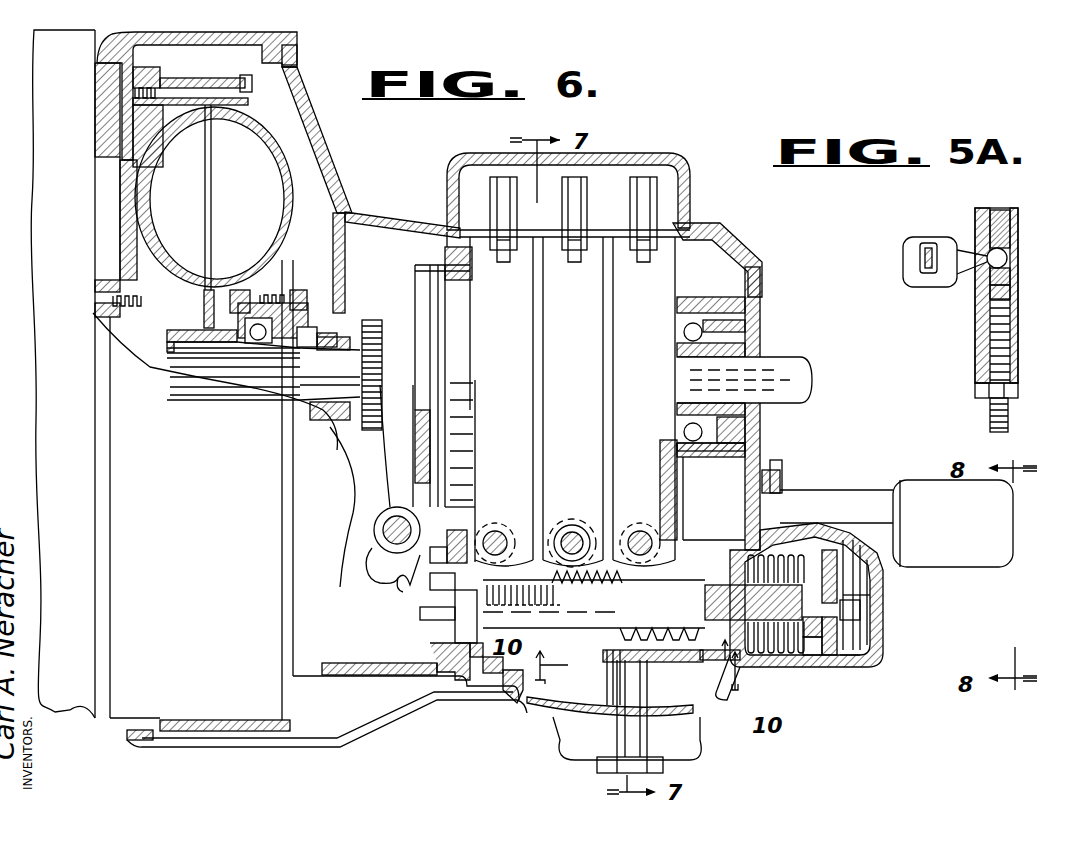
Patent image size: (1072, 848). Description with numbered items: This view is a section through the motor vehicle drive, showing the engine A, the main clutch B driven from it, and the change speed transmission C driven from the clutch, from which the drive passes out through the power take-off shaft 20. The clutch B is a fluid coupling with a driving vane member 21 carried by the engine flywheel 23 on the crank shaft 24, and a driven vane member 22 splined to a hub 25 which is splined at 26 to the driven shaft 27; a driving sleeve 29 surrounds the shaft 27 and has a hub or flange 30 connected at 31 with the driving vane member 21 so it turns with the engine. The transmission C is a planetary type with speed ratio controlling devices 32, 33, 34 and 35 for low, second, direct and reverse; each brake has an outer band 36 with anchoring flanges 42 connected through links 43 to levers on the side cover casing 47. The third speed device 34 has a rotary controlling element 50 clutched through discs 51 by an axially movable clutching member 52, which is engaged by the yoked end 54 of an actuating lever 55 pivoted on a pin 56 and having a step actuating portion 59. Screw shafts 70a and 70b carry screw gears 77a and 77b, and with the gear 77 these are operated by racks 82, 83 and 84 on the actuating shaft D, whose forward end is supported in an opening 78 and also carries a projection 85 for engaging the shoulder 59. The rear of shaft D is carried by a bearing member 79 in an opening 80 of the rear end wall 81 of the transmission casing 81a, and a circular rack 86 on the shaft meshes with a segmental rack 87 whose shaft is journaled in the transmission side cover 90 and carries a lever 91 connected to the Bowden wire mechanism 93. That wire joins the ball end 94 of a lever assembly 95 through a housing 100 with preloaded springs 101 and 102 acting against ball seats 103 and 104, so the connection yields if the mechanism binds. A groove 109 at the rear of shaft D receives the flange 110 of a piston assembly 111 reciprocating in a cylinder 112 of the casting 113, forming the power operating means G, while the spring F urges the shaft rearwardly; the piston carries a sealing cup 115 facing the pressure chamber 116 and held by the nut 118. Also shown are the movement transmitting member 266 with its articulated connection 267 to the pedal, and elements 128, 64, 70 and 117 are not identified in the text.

In FIG. 6, the engine A is at (61, 102).
In FIG. 6, the main clutch B is at (279, 137).
In FIG. 6, the change speed transmission C is at (682, 179).
In FIG. 6, the actuating shaft D is at (780, 657).
In FIG. 6, the prime mover means F is at (775, 557).
In FIG. 6, the power operating means G is at (860, 587).
In FIG. 6, the power take-off shaft 20 is at (793, 372).
In FIG. 6, the driving vane member 21 is at (288, 195).
In FIG. 6, the driven vane member 22 is at (205, 293).
In FIG. 6, the engine flywheel 23 is at (160, 70).
In FIG. 6, the engine crank shaft 24 is at (97, 322).
In FIG. 6, the hub 25 is at (163, 370).
In FIG. 6, the spline 26 is at (213, 353).
In FIG. 6, the driven shaft 27 is at (253, 387).
In FIG. 6, the splined shaft 128 is at (357, 377).
In FIG. 6, the driving sleeve 29 is at (333, 417).
In FIG. 6, the hub or flange 30 is at (336, 255).
In FIG. 6, the connection 31 is at (325, 290).
In FIG. 6, the first speed brake device 32 is at (593, 233).
In FIG. 6, the second speed brake device 33 is at (545, 240).
In FIG. 6, the third speed clutch controlling device 34 is at (418, 278).
In FIG. 6, the reverse brake device 35 is at (685, 212).
In FIG. 6, the outer band 36 is at (633, 330).
In FIG. 6, the anchoring flanges 42 is at (575, 262).
In FIG. 6, the links 43 is at (578, 192).
In FIG. 6, the transmission side cover casing 47 is at (620, 160).
In FIG. 6, the rotary controlling element 50 is at (448, 240).
In FIG. 6, the discs 51 is at (445, 262).
In FIG. 6, the clutching member 52 is at (420, 300).
In FIG. 6, the yoked end 54 is at (405, 365).
In FIG. 6, the actuating lever 55 is at (392, 495).
In FIG. 6, the pin 56 is at (374, 530).
In FIG. 6, the step actuating portion 59 is at (390, 590).
In FIG. 6, the pinion 64 is at (575, 522).
In FIG. 6, the gear 70 is at (625, 522).
In FIG. 6, the reverse speed operating screw shaft 70a is at (660, 540).
In FIG. 6, the second speed operating screw shaft 70b is at (497, 513).
In FIG. 6, the screw gear 77 is at (570, 518).
In FIG. 6, the screw gear 77a is at (650, 583).
In FIG. 6, the screw gear 77b is at (467, 531).
In FIG. 6, the forward opening 78 is at (433, 630).
In FIG. 6, the bearing member 79 is at (742, 558).
In FIG. 6, the opening 80 is at (750, 690).
In FIG. 6, the rear end wall 81 is at (750, 483).
In FIG. 6, the transmission casing 81a is at (737, 241).
In FIG. 6, the rack 82 is at (587, 580).
In FIG. 6, the reverse rack 83 is at (647, 613).
In FIG. 6, the rack 84 is at (503, 613).
In FIG. 6, the third speed actuating projection 85 is at (420, 610).
In FIG. 6, the circular rack 86 is at (742, 572).
In FIG. 6, the segmental rack 87 is at (672, 662).
In FIG. 6, the transmission side cover 90 is at (700, 722).
In FIG. 6, the lever 91 is at (603, 777).
In FIG. 5A, the Bowden wire operating mechanism 93 is at (1008, 412).
In FIG. 5A, the ball end 94 is at (1008, 258).
In FIG. 5A, the lever assembly 95 is at (928, 275).
In FIG. 5A, the housing 100 is at (1018, 345).
In FIG. 5A, the spring 101 is at (975, 236).
In FIG. 5A, the spring 102 is at (1010, 295).
In FIG. 5A, the ball seat 103 is at (1010, 236).
In FIG. 5A, the ball seat 104 is at (1010, 275).
In FIG. 6, the groove 109 is at (822, 547).
In FIG. 6, the flange 110 is at (815, 662).
In FIG. 6, the fluid pressure operating piston assembly 111 is at (833, 550).
In FIG. 6, the cylinder 112 is at (875, 647).
In FIG. 6, the casting 113 is at (793, 500).
In FIG. 6, the flexible sealing cup 115 is at (845, 668).
In FIG. 6, the pressure chamber 116 is at (872, 632).
In FIG. 6, the ring 117 is at (872, 617).
In FIG. 6, the nut 118 is at (870, 603).
In FIG. 6, the movement transmitting member 266 is at (357, 747).
In FIG. 6, the articulated connection 267 is at (120, 740).